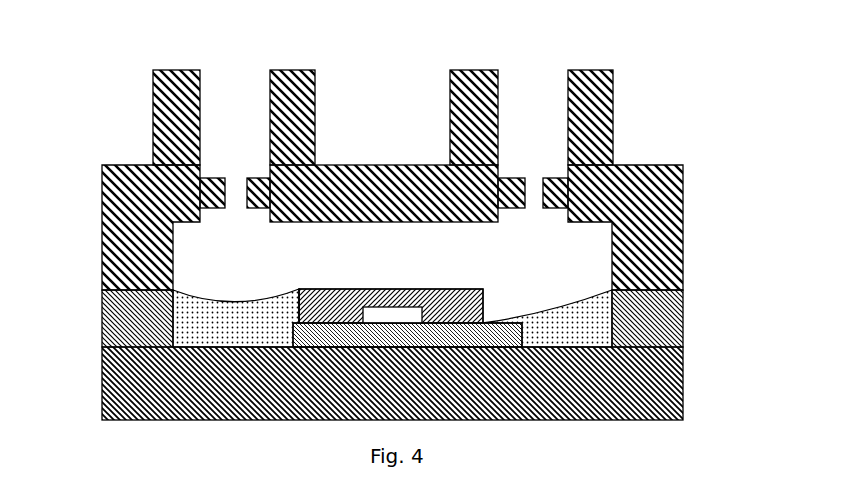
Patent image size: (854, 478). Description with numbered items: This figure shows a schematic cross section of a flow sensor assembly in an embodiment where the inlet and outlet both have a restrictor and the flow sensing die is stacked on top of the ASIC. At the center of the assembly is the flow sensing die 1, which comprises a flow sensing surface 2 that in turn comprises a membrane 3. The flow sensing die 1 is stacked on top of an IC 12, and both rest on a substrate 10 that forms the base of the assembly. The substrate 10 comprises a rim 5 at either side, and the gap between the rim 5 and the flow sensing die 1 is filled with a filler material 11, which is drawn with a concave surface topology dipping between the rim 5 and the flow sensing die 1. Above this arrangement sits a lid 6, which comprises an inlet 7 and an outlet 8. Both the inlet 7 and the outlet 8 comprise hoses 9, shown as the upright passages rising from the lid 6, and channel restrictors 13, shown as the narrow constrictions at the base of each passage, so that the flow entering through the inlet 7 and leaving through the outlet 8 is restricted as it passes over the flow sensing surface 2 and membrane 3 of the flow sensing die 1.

The flow sensing die 1 is at (327, 310).
The flow sensing surface 2 is at (336, 289).
The membrane 3 is at (400, 289).
The rim 5 is at (658, 308).
The lid 6 is at (123, 227).
The inlet 7 is at (237, 195).
The outlet 8 is at (532, 195).
The hoses 9 is at (592, 128).
The substrate 10 is at (612, 373).
The filler material 11 is at (193, 317).
The IC 12 is at (439, 333).
The channel restrictors 13 is at (215, 195).